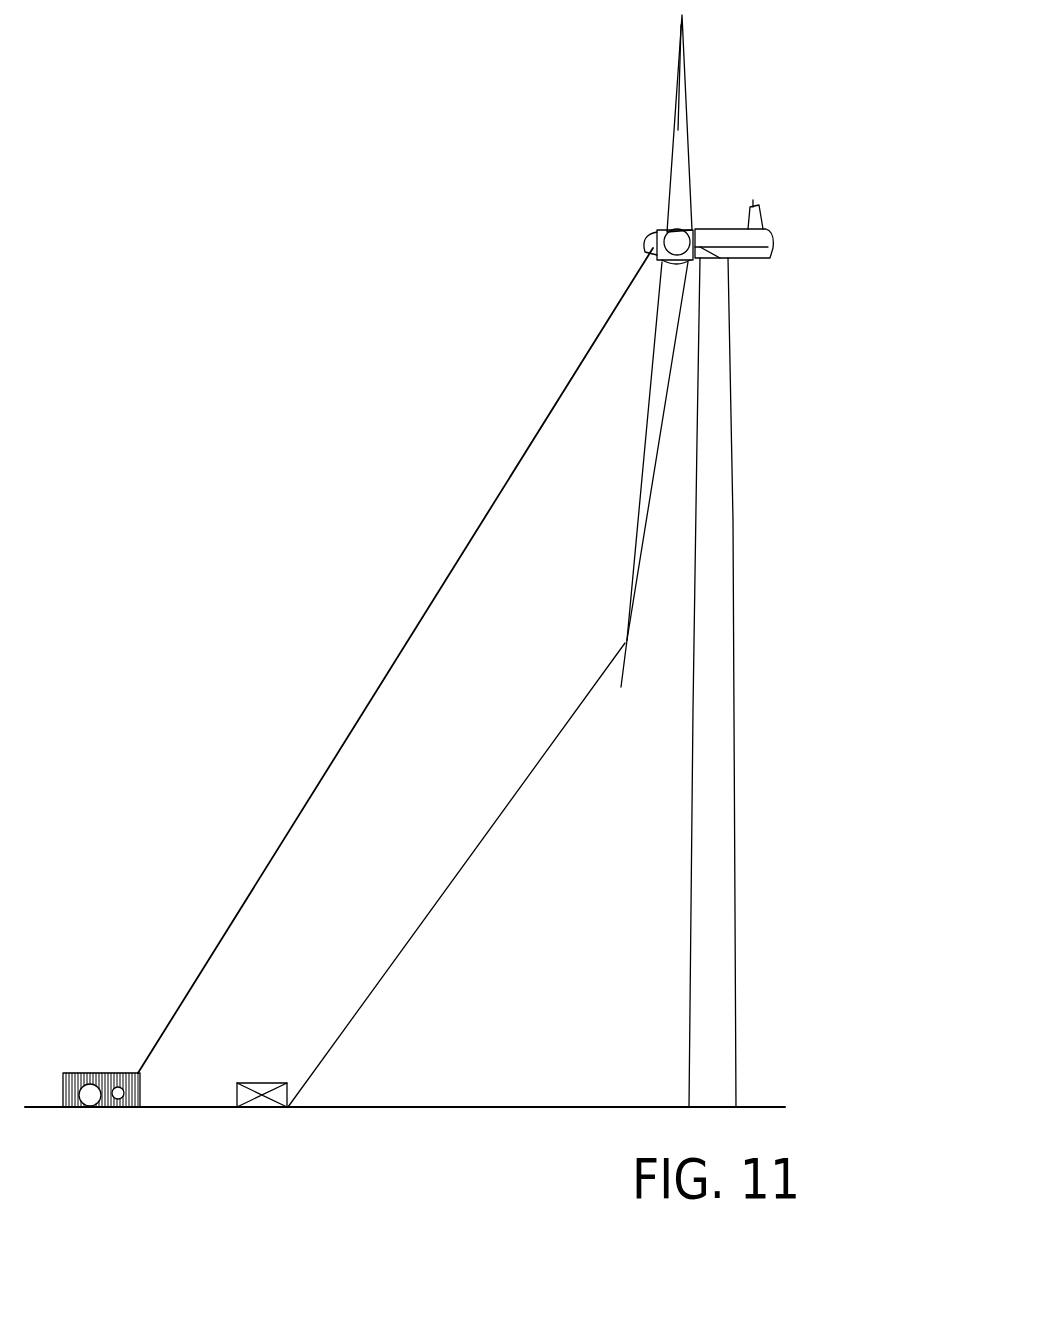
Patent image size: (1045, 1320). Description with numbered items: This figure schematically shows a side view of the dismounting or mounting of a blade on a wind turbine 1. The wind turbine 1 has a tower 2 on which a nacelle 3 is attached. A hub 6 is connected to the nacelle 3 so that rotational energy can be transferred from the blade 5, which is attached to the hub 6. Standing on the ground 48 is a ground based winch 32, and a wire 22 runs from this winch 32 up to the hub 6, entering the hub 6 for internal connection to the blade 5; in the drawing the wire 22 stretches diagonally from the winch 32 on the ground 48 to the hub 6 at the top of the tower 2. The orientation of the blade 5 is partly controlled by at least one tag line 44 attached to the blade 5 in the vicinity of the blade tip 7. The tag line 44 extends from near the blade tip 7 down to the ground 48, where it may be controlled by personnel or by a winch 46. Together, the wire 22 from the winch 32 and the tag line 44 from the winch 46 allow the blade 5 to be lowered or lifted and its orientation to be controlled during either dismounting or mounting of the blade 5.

The wind turbine 1 is at (700, 561).
The tower 2 is at (735, 817).
The nacelle 3 is at (715, 227).
The blade 5 is at (640, 468).
The hub 6 is at (652, 218).
The blade tip 7 is at (623, 630).
The wire 22 is at (368, 702).
The winch 32 is at (70, 1067).
The tag line 44 is at (458, 872).
The winch 46 is at (253, 1078).
The ground 48 is at (490, 1097).